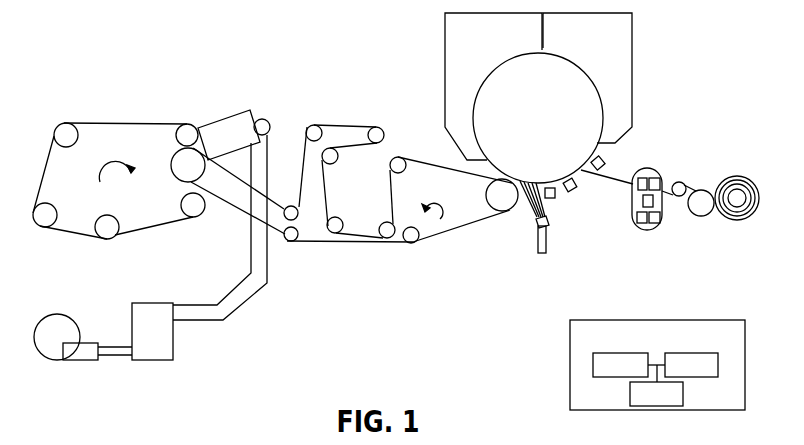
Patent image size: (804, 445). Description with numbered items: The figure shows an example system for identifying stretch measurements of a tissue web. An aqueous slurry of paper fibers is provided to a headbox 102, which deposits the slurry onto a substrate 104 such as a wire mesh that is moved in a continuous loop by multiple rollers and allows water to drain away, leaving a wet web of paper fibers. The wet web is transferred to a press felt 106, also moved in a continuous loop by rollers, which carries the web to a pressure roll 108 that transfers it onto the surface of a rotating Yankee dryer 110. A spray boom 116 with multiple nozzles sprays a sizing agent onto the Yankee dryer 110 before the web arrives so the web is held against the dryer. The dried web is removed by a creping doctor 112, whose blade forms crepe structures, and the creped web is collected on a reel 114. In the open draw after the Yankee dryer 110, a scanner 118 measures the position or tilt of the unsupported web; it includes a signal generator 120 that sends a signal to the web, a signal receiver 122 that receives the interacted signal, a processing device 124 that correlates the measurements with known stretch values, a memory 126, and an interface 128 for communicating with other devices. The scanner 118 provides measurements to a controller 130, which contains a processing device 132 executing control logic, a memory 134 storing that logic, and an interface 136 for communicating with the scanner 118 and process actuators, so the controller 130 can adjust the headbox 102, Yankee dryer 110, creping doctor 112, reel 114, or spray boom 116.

The headbox 102 is at (225, 113).
The substrate 104 is at (118, 120).
The press felt 106 is at (325, 243).
The pressure roll 108 is at (512, 208).
The Yankee dryer 110 is at (524, 129).
The creping doctor 112 is at (577, 190).
The reel 114 is at (735, 218).
The spray boom 116 is at (540, 254).
The scanner 118 is at (650, 230).
The signal generator 120 is at (650, 169).
The signal receiver 122 is at (658, 178).
The processing device 124 is at (655, 202).
The memory 126 is at (635, 218).
The interface 128 is at (657, 227).
The controller 130 is at (657, 347).
The processing device 132 is at (620, 364).
The memory 134 is at (691, 364).
The interface 136 is at (656, 393).